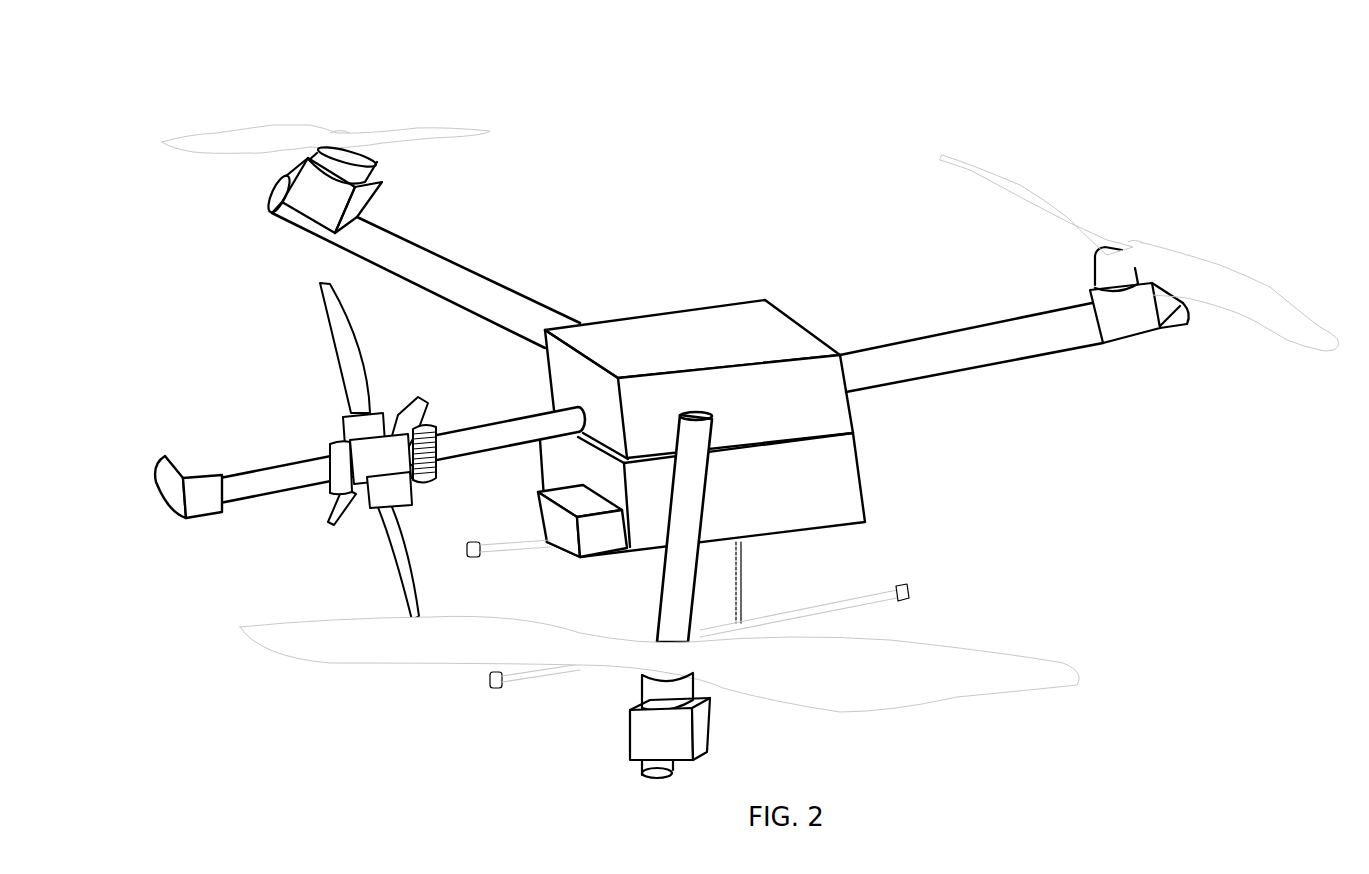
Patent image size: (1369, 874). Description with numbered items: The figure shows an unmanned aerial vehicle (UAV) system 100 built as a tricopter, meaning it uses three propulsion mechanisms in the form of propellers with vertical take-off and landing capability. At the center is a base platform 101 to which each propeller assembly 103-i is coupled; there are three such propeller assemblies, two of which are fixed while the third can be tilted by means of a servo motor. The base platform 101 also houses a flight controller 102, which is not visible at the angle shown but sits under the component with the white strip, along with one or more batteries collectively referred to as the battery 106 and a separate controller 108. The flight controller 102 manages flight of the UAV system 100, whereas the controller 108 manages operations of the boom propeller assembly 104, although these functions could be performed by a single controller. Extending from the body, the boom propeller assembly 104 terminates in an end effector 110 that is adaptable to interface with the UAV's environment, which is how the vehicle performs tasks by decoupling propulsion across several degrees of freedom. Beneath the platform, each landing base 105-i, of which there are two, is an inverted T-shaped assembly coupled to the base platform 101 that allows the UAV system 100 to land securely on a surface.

The UAV system 100 is at (149, 59).
The base platform 101 is at (807, 319).
The flight controller 102 is at (678, 303).
The propeller assembly 103-i is at (1060, 368).
The boom propeller assembly 104 is at (439, 396).
The landing base 105-i is at (920, 598).
The battery 106 is at (870, 484).
The controller 108 is at (597, 566).
The end effector 110 is at (211, 521).